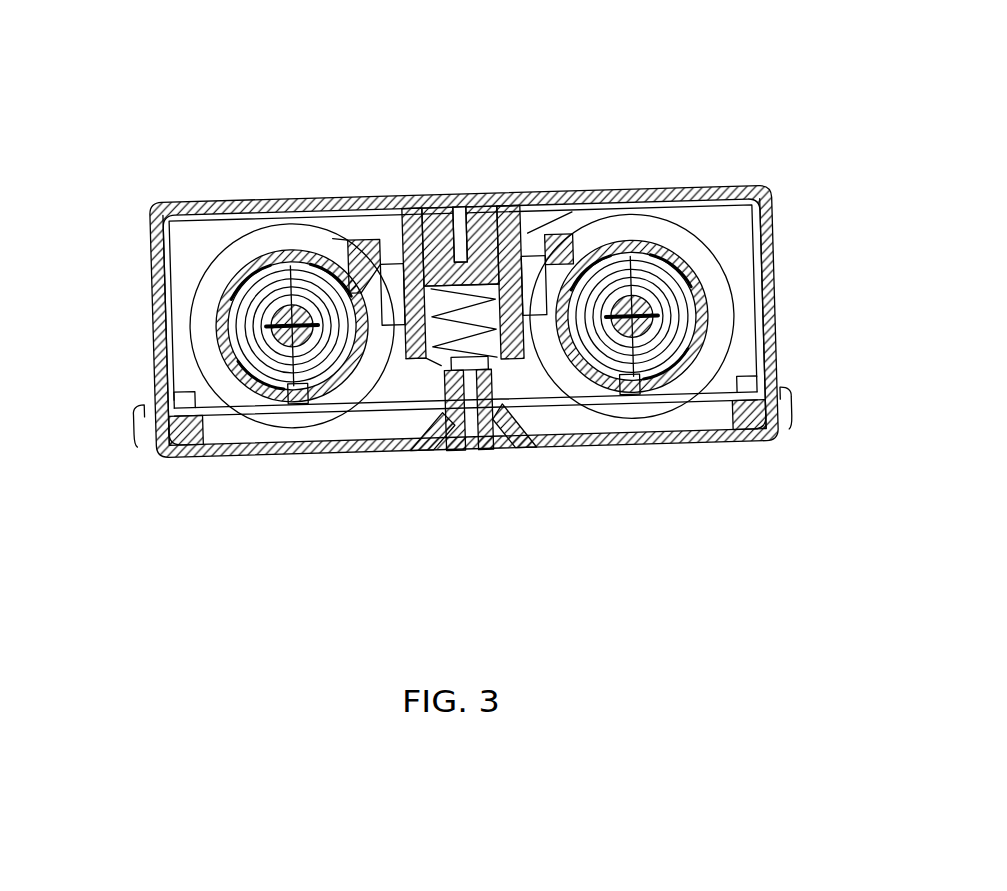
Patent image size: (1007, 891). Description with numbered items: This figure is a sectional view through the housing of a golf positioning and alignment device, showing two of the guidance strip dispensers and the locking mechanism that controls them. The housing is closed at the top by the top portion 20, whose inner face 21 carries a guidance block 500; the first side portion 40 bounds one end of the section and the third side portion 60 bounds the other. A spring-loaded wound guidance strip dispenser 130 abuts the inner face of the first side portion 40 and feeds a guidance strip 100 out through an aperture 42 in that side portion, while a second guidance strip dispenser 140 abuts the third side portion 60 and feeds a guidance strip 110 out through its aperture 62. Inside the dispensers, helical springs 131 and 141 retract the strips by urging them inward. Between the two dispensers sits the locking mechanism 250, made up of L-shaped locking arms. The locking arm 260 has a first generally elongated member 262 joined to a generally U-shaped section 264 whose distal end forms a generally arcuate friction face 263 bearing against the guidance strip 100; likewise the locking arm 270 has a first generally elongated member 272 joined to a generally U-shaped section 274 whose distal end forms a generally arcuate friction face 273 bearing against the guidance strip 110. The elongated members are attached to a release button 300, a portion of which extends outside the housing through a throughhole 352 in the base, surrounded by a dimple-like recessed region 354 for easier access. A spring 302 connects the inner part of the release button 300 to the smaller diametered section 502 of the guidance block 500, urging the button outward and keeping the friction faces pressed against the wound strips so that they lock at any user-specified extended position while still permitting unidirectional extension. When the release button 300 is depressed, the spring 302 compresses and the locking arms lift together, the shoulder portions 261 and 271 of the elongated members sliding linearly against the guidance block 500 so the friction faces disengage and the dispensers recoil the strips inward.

The top portion 20 is at (699, 187).
The inner face 21 is at (748, 187).
The first side portion 40 is at (153, 317).
The aperture 42 is at (160, 405).
The third side portion 60 is at (767, 290).
The aperture 62 is at (771, 384).
The guidance strip 100 is at (130, 418).
The guidance strip 110 is at (795, 402).
The guidance strip dispenser 130 is at (280, 382).
The helical spring 131 is at (250, 268).
The guidance strip dispenser 140 is at (659, 348).
The helical spring 141 is at (660, 298).
The locking mechanism 250 is at (367, 258).
The locking arm 260 is at (420, 358).
The shoulder portion 261 is at (425, 263).
The first generally elongated member 262 is at (432, 375).
The generally arcuate friction face 263 is at (312, 253).
The generally U-shaped section 264 is at (385, 240).
The locking arm 270 is at (541, 235).
The shoulder portion 271 is at (517, 215).
The first generally elongated member 272 is at (522, 395).
The generally arcuate friction face 273 is at (632, 215).
The generally U-shaped section 274 is at (534, 243).
The release button 300 is at (461, 452).
The spring 302 is at (446, 213).
The throughhole 352 is at (436, 453).
The recessed region 354 is at (497, 440).
The guidance block 500 is at (482, 215).
The smaller diametered section 502 is at (505, 215).